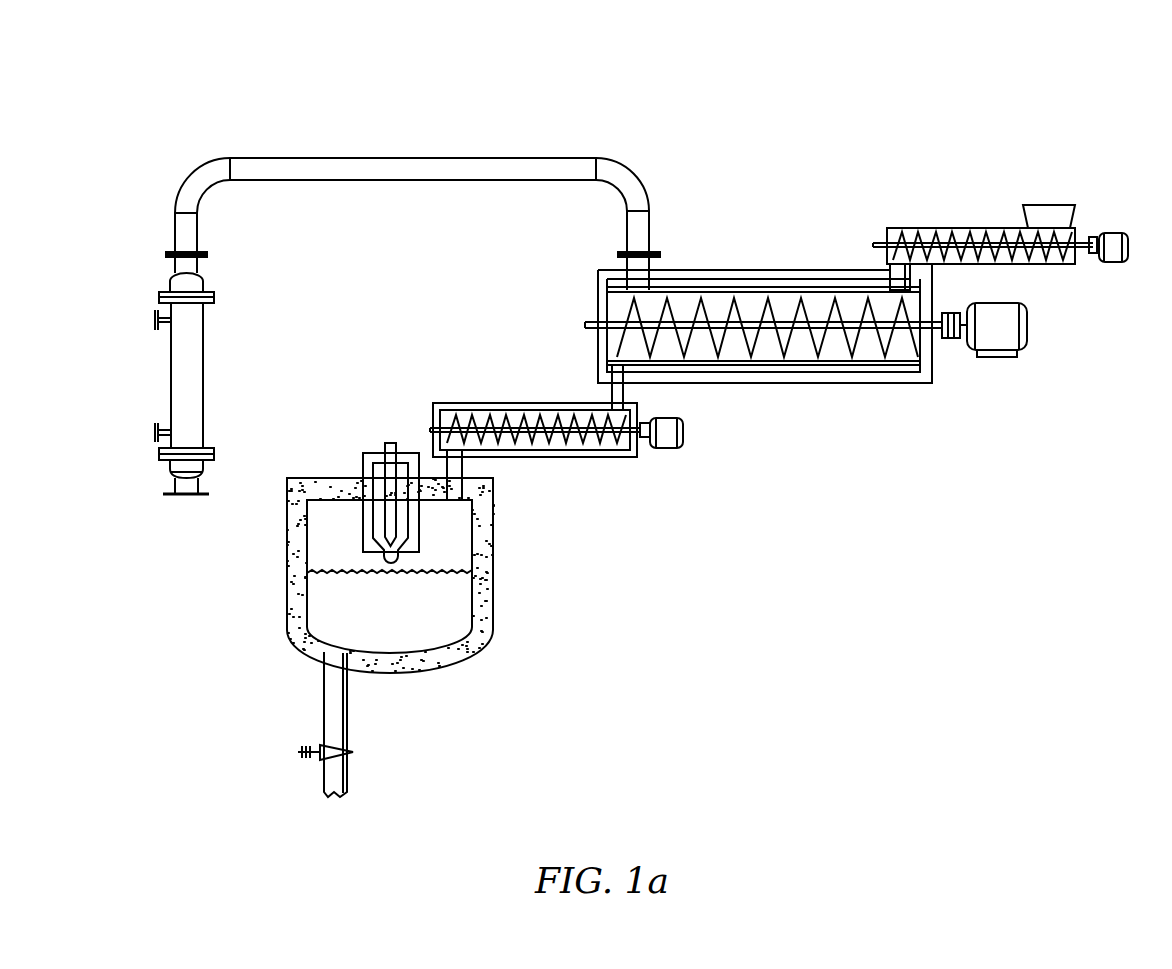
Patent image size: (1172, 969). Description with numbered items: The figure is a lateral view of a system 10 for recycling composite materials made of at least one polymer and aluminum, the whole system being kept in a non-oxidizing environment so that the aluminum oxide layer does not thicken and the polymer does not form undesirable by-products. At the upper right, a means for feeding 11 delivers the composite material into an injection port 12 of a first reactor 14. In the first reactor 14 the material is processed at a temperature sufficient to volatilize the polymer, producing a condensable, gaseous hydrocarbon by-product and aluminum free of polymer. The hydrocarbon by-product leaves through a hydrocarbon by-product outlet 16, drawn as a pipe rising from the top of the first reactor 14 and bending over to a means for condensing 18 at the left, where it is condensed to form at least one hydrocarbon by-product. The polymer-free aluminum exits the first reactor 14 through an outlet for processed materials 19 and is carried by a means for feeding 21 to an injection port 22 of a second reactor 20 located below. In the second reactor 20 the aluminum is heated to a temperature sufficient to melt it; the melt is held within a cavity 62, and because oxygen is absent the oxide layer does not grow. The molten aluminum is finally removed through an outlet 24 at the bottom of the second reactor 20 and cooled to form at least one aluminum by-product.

The system 10 is at (205, 90).
The means for feeding 11 is at (1025, 272).
The injection port 12 is at (892, 277).
The first reactor 14 is at (835, 344).
The hydrocarbon by-product outlet 16 is at (655, 265).
The means for condensing 18 is at (208, 383).
The outlet for processed materials 19 is at (610, 395).
The second reactor 20 is at (500, 623).
The means for feeding 21 is at (612, 462).
The injection port 22 is at (463, 464).
The outlet 24 is at (324, 692).
The cavity 62 is at (330, 602).